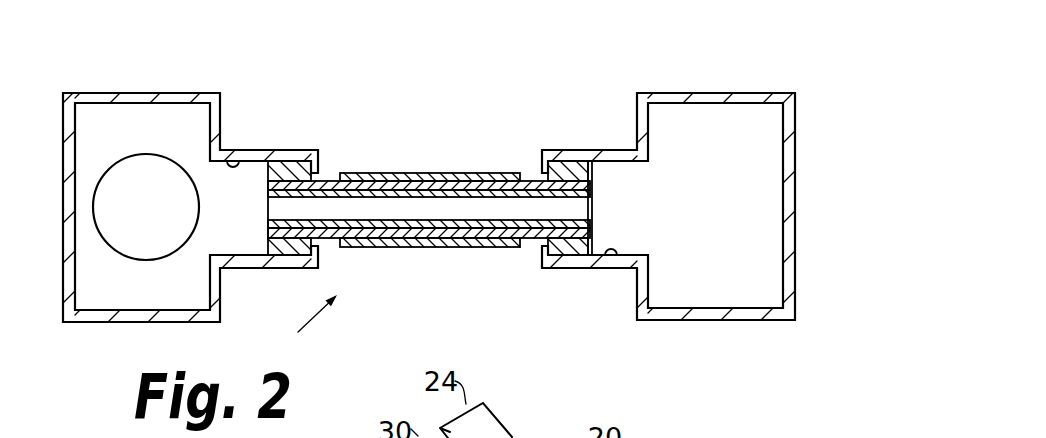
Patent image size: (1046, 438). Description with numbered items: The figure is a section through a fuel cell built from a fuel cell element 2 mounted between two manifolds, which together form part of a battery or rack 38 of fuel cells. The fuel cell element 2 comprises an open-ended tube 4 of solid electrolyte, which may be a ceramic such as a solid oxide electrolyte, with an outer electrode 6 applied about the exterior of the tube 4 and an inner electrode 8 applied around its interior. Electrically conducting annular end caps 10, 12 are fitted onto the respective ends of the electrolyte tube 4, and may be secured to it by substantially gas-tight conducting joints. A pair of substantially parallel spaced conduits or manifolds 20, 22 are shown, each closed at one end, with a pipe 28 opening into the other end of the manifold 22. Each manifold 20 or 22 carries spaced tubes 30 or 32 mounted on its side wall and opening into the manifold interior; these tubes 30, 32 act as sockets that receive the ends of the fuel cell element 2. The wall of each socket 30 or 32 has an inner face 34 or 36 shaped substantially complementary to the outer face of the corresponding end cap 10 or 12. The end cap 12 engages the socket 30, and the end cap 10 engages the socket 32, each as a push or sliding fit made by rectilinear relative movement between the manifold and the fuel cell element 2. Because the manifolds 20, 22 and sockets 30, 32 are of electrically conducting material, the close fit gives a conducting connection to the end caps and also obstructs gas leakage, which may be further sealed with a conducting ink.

The fuel cell element 2 is at (468, 171).
The electrolyte tube 4 is at (578, 186).
The outer electrode 6 is at (418, 246).
The inner electrode 8 is at (565, 198).
The end cap 10 is at (272, 248).
The end cap 12 is at (578, 170).
The manifold 20 is at (785, 120).
The manifold 22 is at (162, 92).
The pipe 28 is at (128, 157).
The socket 30 is at (556, 263).
The socket 32 is at (293, 153).
The inner face 34 is at (612, 256).
The inner face 36 is at (238, 163).
The battery or rack 38 is at (299, 324).